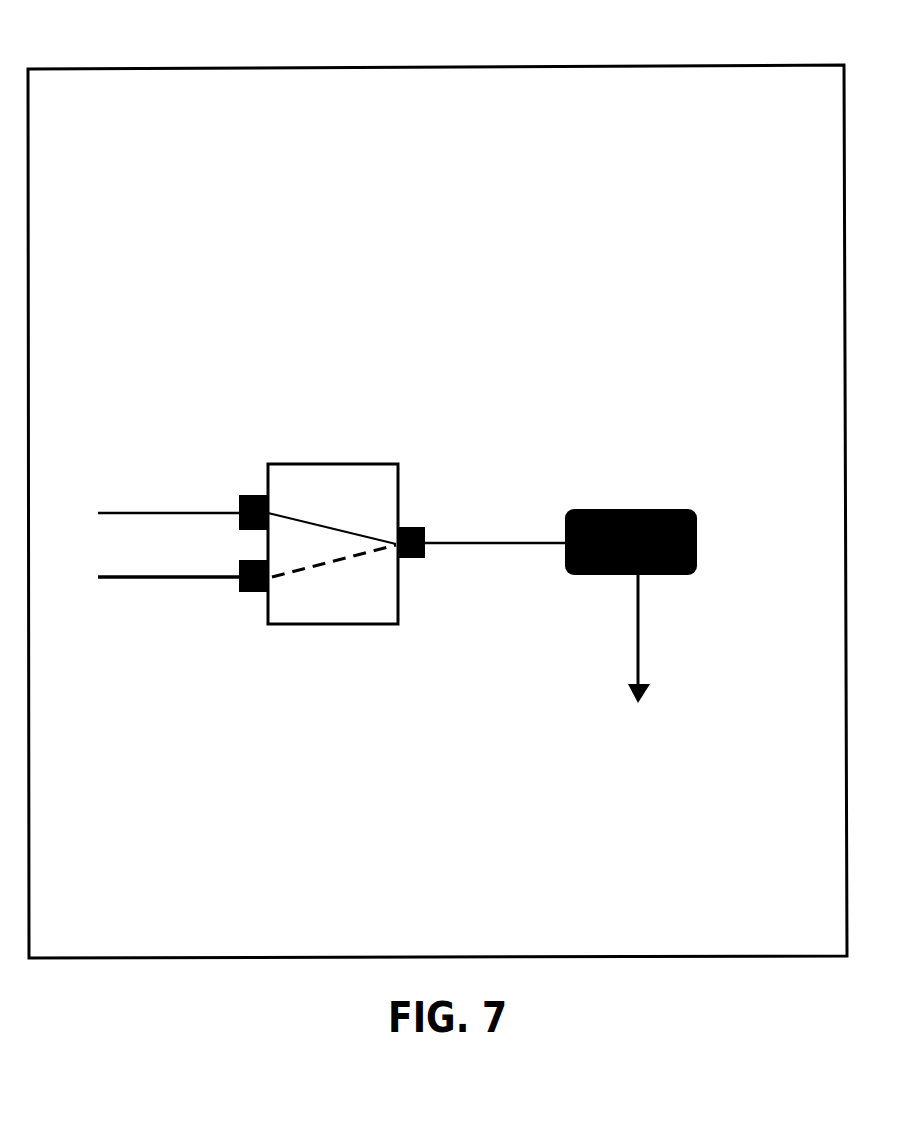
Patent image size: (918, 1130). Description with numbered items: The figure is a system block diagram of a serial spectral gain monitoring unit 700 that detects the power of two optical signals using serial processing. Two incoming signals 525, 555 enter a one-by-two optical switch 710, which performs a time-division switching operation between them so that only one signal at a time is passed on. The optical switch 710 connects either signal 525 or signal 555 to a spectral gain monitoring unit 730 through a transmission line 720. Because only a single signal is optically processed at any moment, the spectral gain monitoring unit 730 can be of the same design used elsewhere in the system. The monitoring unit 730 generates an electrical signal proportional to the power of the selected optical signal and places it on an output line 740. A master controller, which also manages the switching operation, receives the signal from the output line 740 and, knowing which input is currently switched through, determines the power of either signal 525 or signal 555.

The serial spectral gain monitoring unit 700 is at (471, 40).
The 1×2 optical switch 710 is at (327, 478).
The first incoming optical signal 525 is at (168, 483).
The second incoming optical signal 555 is at (168, 595).
The transmission line 720 is at (470, 543).
The spectral gain monitoring unit 730 is at (645, 508).
The output line 740 is at (638, 623).